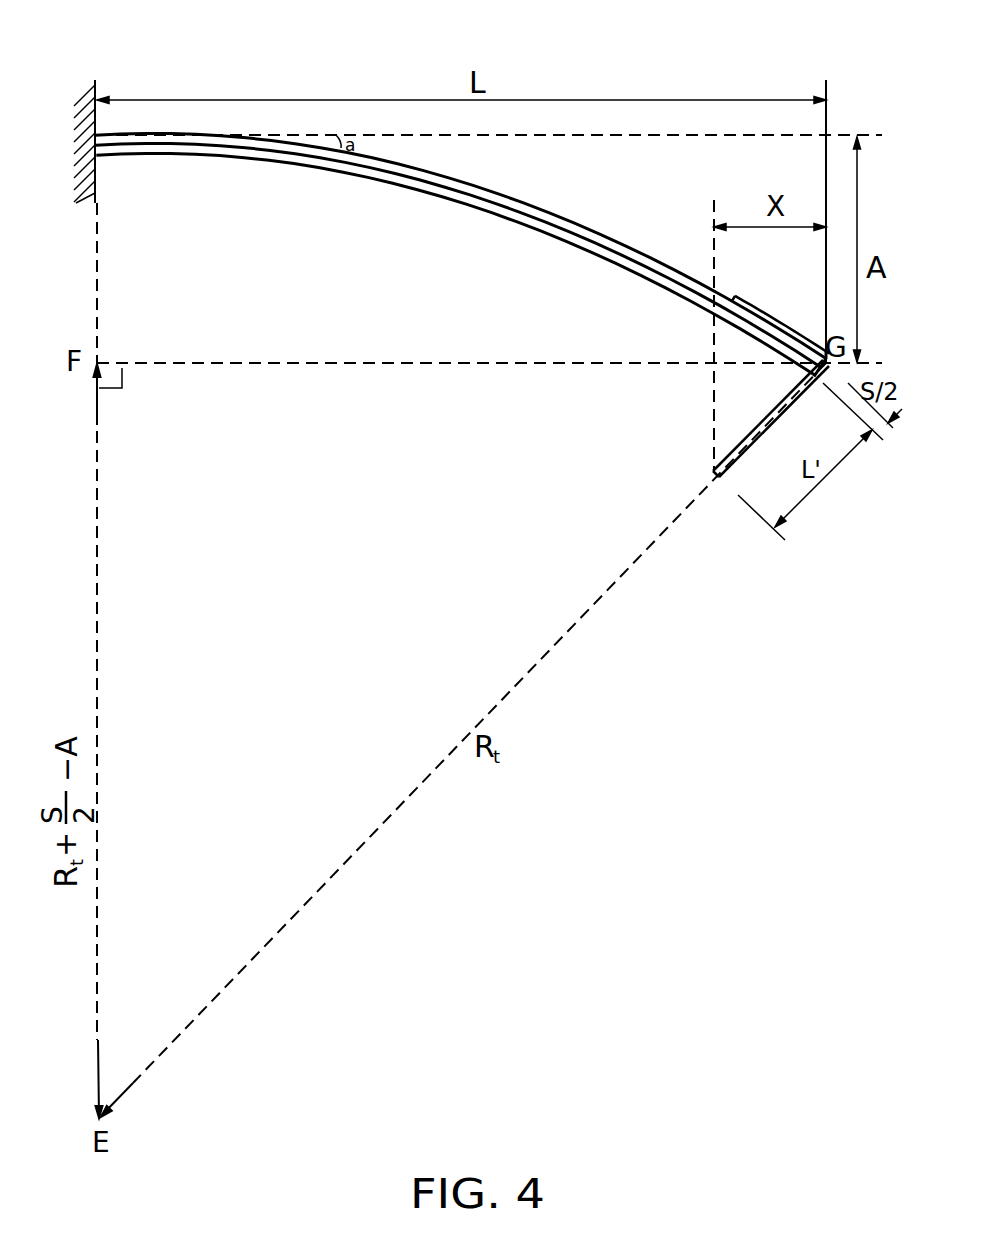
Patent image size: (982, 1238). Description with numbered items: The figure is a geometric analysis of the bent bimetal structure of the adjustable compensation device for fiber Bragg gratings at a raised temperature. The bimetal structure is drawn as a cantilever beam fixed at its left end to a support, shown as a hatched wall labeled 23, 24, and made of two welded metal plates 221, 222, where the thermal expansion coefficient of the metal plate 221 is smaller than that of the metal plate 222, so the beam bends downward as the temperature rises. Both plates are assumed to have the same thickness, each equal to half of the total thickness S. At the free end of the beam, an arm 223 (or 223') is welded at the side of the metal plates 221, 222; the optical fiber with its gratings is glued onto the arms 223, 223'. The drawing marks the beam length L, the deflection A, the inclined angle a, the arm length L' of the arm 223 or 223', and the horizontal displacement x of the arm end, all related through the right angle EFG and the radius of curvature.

The fixed support 23 is at (110, 111).
The fixed support 24 is at (77, 133).
The metal plate 221 is at (566, 240).
The metal plate 222 is at (552, 212).
The arm 223 is at (752, 479).
The arm 223' is at (780, 325).